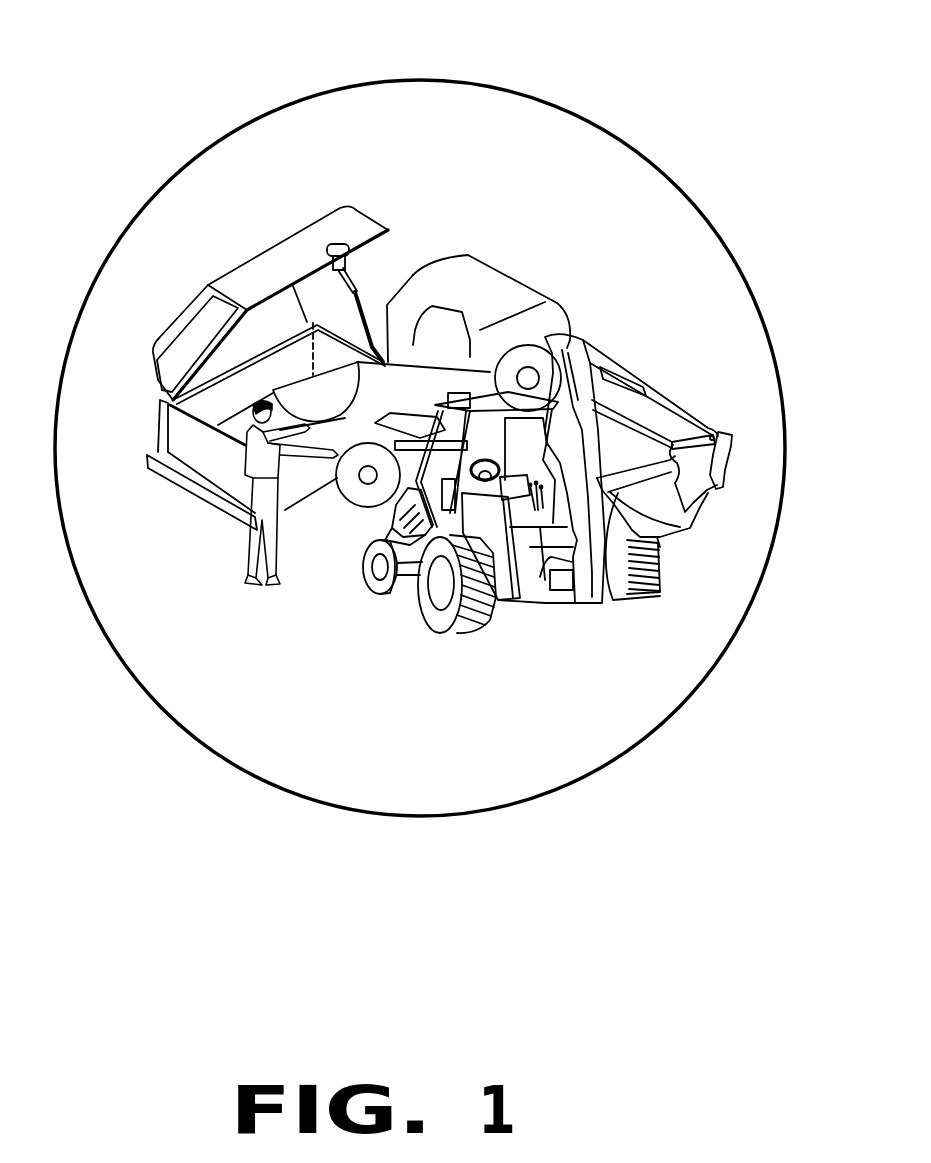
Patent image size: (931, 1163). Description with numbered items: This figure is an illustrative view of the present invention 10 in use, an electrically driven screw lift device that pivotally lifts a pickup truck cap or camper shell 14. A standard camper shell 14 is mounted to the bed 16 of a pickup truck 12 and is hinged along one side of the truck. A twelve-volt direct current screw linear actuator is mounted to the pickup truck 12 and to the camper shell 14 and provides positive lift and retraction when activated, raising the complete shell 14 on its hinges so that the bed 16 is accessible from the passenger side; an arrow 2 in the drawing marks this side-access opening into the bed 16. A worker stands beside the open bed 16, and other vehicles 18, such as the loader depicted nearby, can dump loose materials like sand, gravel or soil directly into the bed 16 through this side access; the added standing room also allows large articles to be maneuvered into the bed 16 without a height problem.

The present invention 10 is at (374, 289).
The pickup truck 12 is at (500, 290).
The camper shell 14 is at (288, 257).
The bed 16 is at (233, 472).
The other vehicles 18 is at (620, 373).
The lift assembly 2 is at (196, 416).